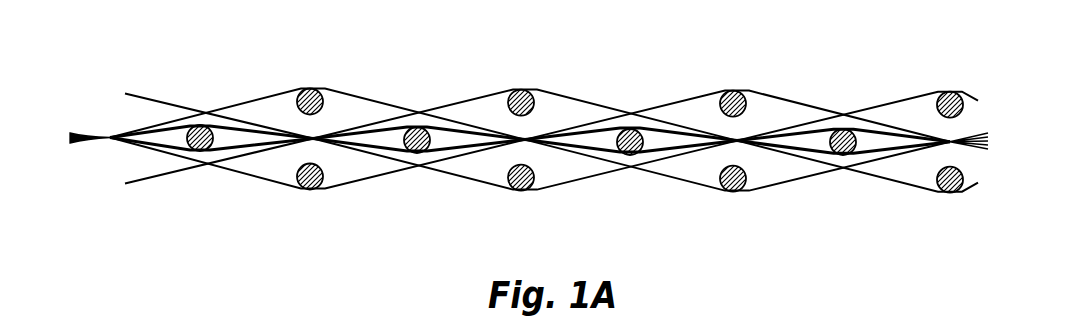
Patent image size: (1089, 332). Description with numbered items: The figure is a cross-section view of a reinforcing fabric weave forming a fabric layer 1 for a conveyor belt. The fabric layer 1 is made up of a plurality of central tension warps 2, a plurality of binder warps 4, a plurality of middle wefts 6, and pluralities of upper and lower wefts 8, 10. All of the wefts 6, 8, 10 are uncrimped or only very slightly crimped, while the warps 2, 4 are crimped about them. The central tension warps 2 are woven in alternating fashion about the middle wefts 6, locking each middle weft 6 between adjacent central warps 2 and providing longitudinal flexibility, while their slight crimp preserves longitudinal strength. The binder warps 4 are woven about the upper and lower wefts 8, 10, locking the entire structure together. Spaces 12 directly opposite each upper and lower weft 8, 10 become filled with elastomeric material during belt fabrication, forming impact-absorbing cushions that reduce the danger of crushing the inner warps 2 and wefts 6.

The fabric layer 1 is at (896, 76).
The central tension warps 2 is at (577, 132).
The binder warps 4 is at (335, 91).
The middle wefts 6 is at (843, 129).
The upper wefts 8 is at (961, 97).
The lower wefts 10 is at (960, 190).
The spaces 12 is at (278, 106).